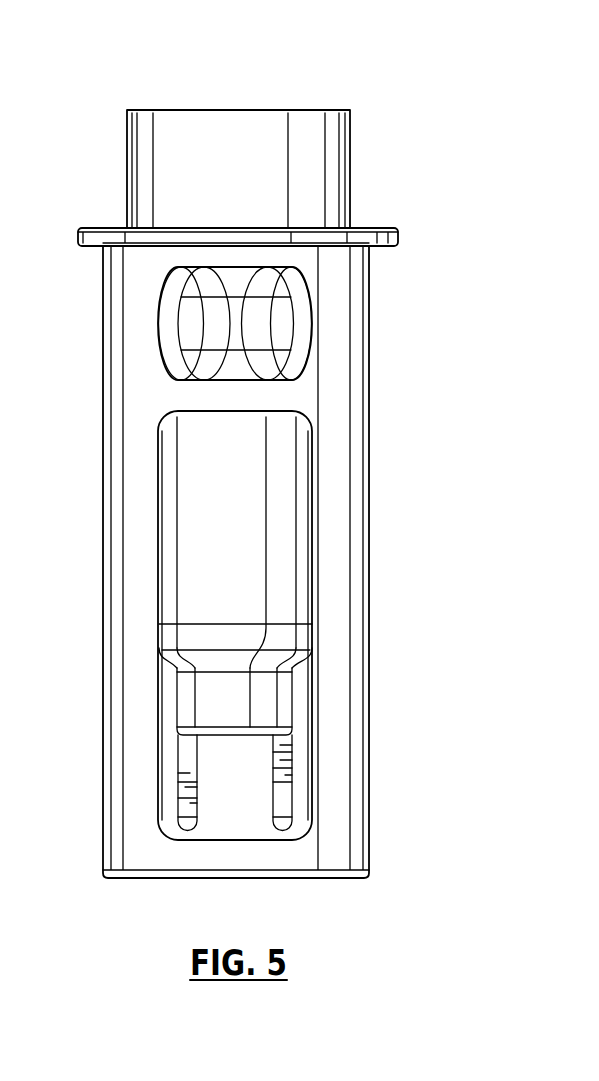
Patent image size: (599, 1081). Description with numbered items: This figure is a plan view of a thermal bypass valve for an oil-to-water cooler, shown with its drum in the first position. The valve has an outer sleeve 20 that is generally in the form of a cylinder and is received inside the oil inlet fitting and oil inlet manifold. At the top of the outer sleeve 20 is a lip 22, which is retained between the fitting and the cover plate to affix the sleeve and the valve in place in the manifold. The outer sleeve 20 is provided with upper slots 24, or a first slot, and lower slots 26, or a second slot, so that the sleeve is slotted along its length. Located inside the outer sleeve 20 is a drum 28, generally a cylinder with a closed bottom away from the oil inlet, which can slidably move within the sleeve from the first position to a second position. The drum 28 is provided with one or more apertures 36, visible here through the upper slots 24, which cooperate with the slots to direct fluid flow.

The outer sleeve 20 is at (343, 395).
The lip 22 is at (98, 238).
The upper slots 24 is at (285, 303).
The lower slots 26 is at (265, 790).
The drum 28 is at (245, 130).
The apertures 36 is at (257, 342).